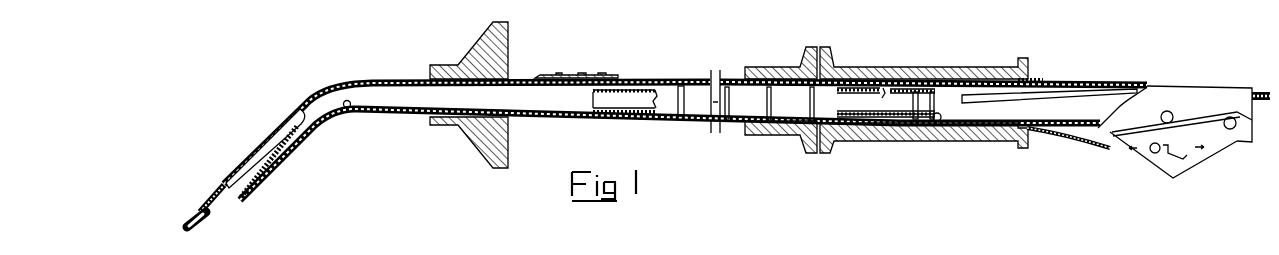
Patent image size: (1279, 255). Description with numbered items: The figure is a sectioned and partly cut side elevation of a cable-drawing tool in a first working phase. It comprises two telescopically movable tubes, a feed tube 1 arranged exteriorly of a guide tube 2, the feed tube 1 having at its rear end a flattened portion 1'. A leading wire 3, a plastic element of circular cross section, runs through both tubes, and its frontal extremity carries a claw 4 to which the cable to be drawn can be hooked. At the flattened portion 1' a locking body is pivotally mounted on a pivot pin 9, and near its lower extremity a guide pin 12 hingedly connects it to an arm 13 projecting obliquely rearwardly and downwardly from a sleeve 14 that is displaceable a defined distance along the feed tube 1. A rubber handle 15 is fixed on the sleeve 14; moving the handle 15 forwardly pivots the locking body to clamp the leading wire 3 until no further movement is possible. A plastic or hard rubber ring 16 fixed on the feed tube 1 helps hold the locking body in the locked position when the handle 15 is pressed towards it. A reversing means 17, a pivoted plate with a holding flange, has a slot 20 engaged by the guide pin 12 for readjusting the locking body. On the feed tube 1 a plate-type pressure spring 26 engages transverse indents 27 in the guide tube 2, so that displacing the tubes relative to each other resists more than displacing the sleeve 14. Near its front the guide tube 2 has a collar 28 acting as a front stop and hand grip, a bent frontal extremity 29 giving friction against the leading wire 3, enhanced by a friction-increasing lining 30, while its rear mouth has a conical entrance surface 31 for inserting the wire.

The feed tube 1 is at (685, 109).
The flattened portion 1' is at (1175, 90).
The guide tube 2 is at (520, 119).
The leading wire 3 is at (217, 198).
The claw 4 is at (205, 223).
The pivot pin 9 is at (1172, 114).
The guide pin 12 is at (1151, 152).
The arm 13 is at (1093, 133).
The sleeve 14 is at (1035, 79).
The handle 15 is at (915, 67).
The ring 16 is at (778, 67).
The reversing means 17 is at (1213, 153).
The slot 20 is at (1174, 170).
The pressure spring 26 is at (562, 77).
The indents 27 is at (686, 110).
The collar 28 is at (477, 133).
The bent frontal extremity 29 is at (271, 131).
The friction-increasing lining 30 is at (349, 108).
The conical entrance surface 31 is at (935, 122).